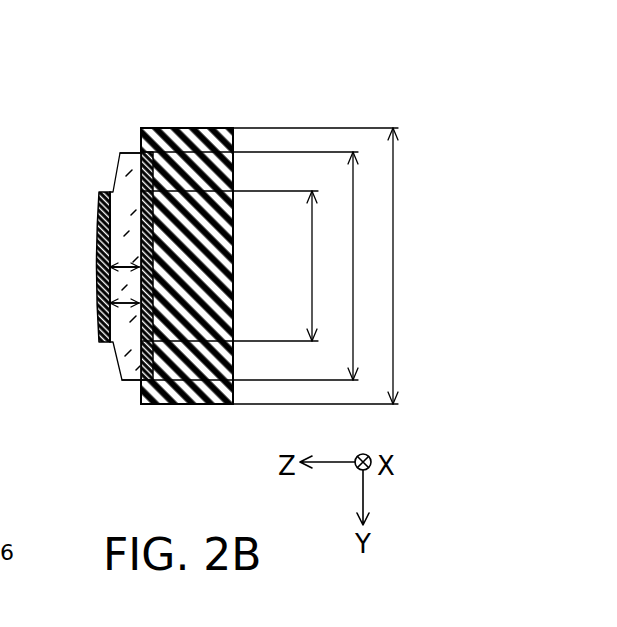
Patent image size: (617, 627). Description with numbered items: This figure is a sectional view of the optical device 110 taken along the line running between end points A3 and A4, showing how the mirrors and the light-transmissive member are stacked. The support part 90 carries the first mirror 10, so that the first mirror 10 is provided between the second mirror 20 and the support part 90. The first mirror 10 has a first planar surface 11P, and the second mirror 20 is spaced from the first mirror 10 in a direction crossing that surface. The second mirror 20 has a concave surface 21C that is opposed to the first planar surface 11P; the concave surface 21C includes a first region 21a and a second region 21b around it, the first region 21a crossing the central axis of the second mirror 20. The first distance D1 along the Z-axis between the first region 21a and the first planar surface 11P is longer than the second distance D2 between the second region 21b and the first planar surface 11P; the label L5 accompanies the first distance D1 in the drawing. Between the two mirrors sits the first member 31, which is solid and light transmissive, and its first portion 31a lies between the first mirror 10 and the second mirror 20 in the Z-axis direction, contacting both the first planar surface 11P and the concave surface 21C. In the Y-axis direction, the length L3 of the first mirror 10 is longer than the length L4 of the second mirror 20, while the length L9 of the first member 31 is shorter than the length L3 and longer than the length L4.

The first mirror 10 is at (140, 180).
The first planar surface 11P is at (140, 188).
The second mirror 20 is at (99, 244).
The concave surface 21C is at (118, 222).
The first region 21a is at (107, 267).
The second region 21b is at (107, 303).
The first member 31 is at (112, 345).
The first portion 31a is at (115, 323).
The support part 90 is at (192, 140).
The optical device 110 is at (287, 97).
The line A3-A4 end point A3 is at (197, 421).
The line A3-A4 end point A4 is at (197, 117).
The first distance D1 is at (122, 266).
The second distance D2 is at (122, 302).
The length L3 is at (331, 266).
The length L4 is at (246, 266).
The length L5 is at (205, 268).
The length L9 is at (265, 266).